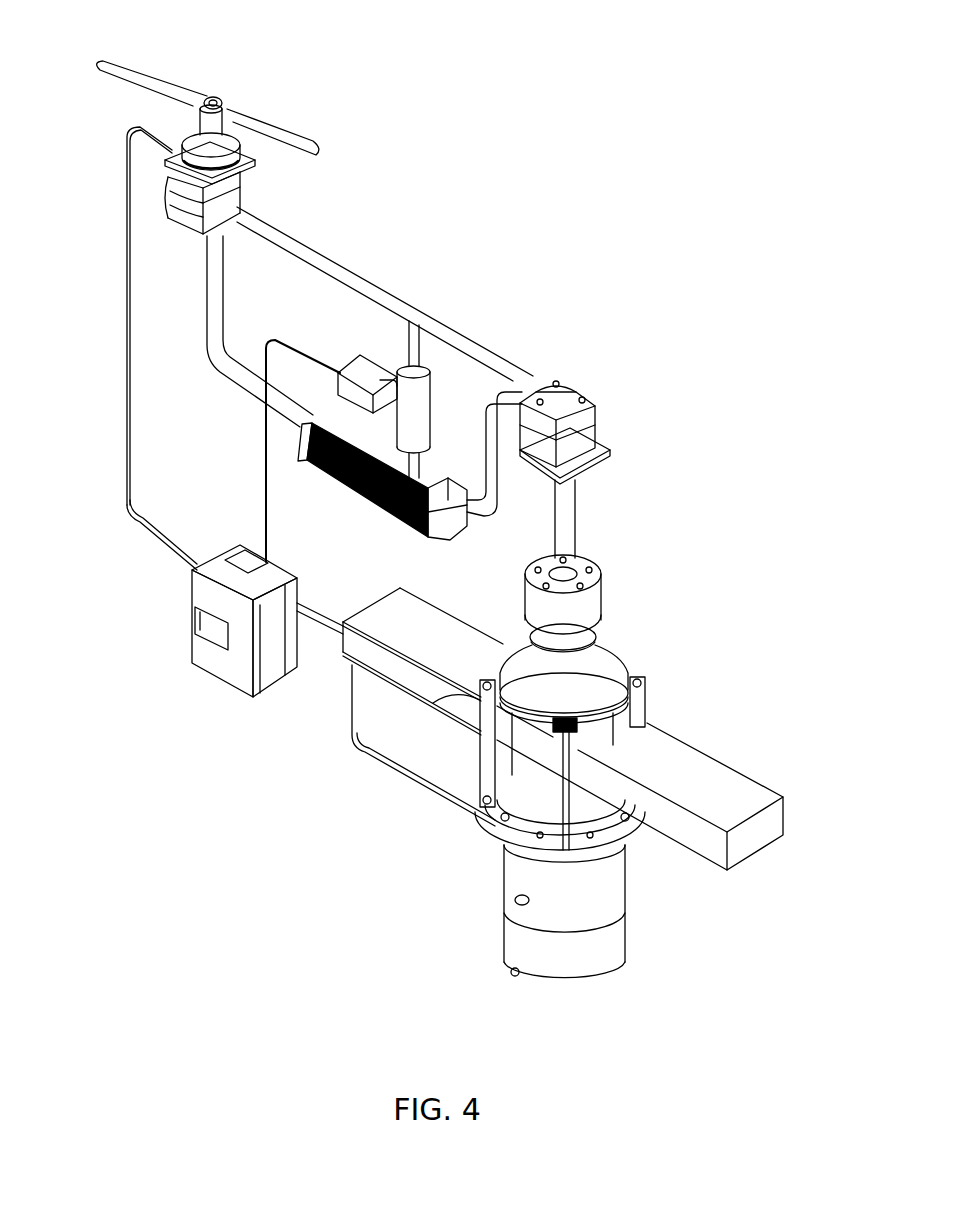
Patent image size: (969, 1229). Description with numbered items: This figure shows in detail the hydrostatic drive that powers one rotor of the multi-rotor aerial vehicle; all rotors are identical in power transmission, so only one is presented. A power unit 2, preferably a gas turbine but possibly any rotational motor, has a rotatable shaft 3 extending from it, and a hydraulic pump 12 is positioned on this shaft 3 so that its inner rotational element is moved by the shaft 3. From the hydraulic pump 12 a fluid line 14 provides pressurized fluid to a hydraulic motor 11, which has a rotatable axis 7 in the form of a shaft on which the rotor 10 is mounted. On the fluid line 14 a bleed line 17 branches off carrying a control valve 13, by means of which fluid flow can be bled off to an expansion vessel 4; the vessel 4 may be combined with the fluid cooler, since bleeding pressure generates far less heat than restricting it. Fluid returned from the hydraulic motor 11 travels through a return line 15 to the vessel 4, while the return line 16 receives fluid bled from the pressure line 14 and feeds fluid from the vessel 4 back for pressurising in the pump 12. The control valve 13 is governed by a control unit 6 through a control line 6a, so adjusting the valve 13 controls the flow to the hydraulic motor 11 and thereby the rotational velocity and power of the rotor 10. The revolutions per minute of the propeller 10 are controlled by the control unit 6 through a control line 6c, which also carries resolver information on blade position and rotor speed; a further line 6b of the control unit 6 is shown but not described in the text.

The power unit 2 is at (518, 868).
The rotatable shaft 3 is at (568, 520).
The expansion vessel 4 is at (342, 485).
The control unit 6 is at (218, 660).
The control line 6a is at (265, 410).
The controller line 6b is at (327, 627).
The control line 6c is at (120, 480).
The rotatable axis 7 is at (211, 98).
The rotor 10 is at (127, 68).
The hydraulic motor 11 is at (237, 190).
The hydraulic pump 12 is at (578, 405).
The control valve 13 is at (410, 427).
The fluid line 14 is at (487, 352).
The return line 15 is at (230, 368).
The return line 16 is at (483, 516).
The bleed line 17 is at (405, 332).